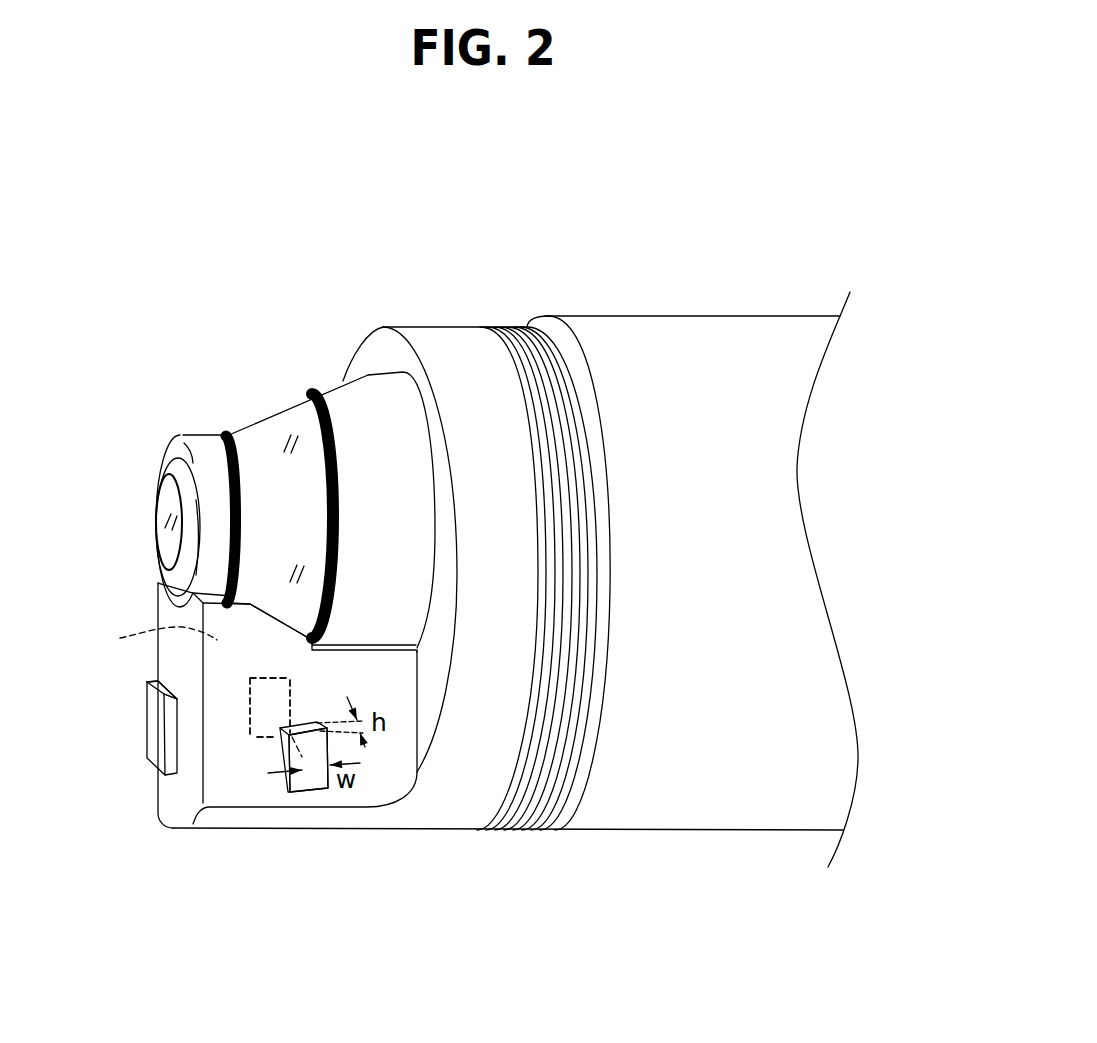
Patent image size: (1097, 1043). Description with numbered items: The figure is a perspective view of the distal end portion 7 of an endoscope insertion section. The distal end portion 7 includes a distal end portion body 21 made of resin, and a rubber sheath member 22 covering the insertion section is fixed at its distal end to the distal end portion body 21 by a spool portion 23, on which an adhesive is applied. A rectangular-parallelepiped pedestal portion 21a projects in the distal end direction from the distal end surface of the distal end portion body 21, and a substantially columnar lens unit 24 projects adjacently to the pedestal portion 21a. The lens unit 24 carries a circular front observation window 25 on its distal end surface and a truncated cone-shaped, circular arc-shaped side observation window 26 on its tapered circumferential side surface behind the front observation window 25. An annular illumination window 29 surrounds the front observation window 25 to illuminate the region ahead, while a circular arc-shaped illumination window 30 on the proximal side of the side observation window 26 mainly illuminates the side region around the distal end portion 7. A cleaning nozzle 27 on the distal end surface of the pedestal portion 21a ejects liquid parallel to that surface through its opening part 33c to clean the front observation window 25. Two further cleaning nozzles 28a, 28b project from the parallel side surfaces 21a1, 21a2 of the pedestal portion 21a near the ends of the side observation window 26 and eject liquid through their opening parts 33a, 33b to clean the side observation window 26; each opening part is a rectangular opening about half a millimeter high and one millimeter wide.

The distal end portion 7 is at (423, 870).
The distal end portion body 21 is at (438, 338).
The sheath member 22 is at (663, 333).
The spool portion 23 is at (477, 327).
The lens unit 24 is at (182, 403).
The front observation window 25 is at (170, 498).
The side observation window 26 is at (278, 422).
The cleaning nozzle 27 is at (155, 728).
The cleaning nozzle 28a is at (320, 795).
The cleaning nozzle 28b is at (250, 737).
The illumination window 29 is at (185, 438).
The illumination window 30 is at (370, 382).
The pedestal portion 21a is at (223, 820).
The side surface 21a1 is at (217, 767).
The side surface 21a2 is at (120, 638).
The opening part 33a is at (300, 727).
The opening part 33b is at (265, 678).
The opening part 33c is at (157, 681).